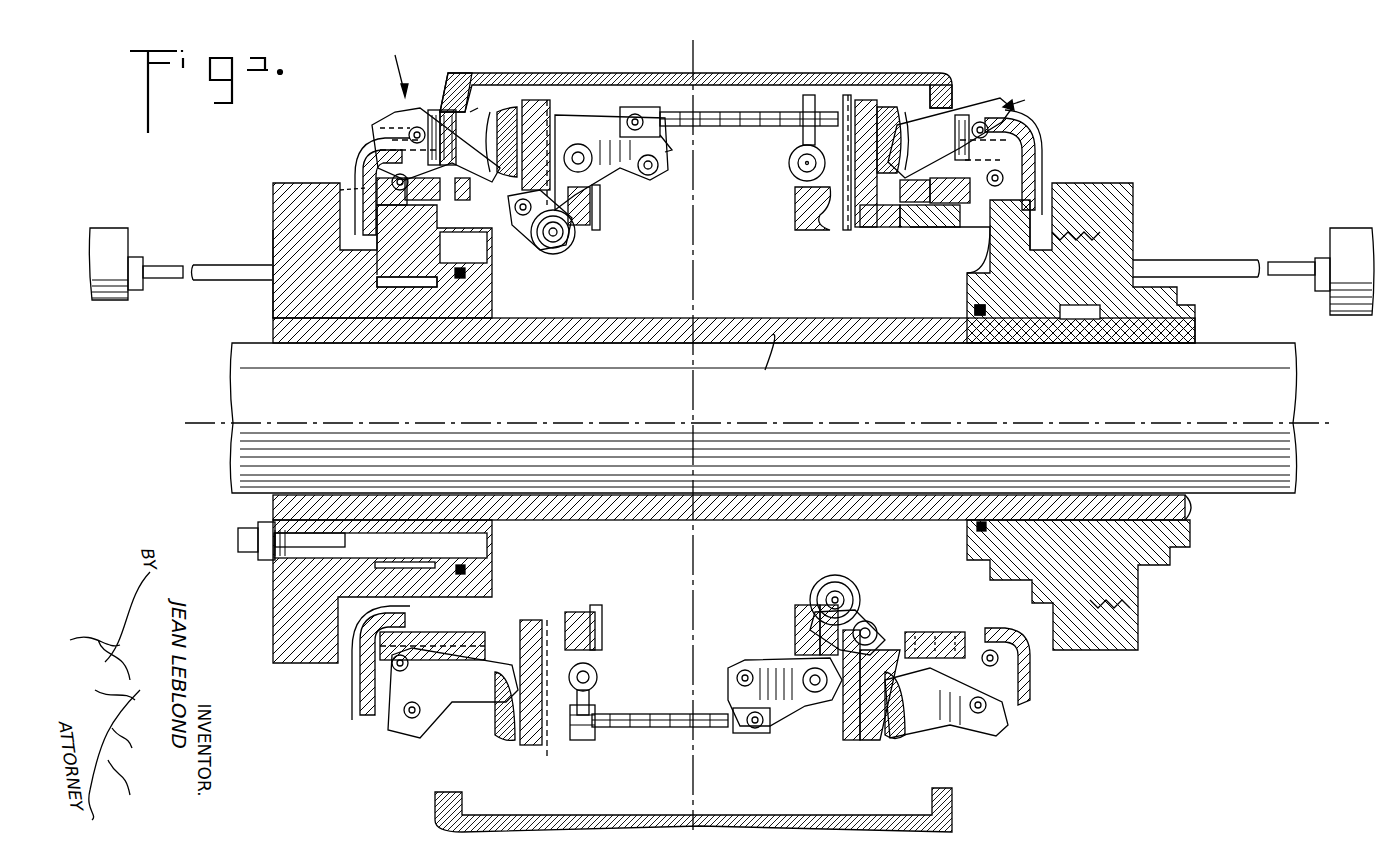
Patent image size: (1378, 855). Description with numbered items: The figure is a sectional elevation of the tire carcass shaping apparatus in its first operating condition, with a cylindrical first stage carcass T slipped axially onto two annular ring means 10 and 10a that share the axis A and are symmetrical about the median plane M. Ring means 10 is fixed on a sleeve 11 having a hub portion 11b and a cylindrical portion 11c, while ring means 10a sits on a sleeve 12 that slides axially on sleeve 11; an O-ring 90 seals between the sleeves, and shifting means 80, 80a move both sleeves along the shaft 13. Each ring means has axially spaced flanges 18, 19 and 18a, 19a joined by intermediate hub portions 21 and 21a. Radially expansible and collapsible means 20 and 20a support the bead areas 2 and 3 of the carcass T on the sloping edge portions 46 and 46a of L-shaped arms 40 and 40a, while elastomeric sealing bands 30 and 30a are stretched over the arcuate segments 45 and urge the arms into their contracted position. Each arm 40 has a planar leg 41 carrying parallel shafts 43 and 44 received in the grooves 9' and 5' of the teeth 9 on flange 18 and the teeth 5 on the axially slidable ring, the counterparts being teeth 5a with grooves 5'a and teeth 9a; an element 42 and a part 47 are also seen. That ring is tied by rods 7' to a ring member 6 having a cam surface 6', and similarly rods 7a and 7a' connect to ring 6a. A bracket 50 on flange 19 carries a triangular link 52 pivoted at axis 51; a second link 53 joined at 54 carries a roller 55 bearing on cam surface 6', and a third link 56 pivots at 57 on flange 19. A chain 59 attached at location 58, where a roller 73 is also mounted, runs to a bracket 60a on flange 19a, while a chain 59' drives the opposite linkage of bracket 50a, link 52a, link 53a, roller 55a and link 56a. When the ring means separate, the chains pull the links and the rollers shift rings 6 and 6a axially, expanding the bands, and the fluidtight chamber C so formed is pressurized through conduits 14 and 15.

The bead area 2 is at (455, 85).
The bead area 3 is at (950, 95).
The teeth 5 is at (358, 191).
The teeth 5a is at (1025, 165).
The groove 5' is at (333, 201).
The groove 5'a is at (926, 218).
The ring member 6 is at (612, 417).
The ring member 6a is at (798, 215).
The cam surface 6' is at (573, 656).
The tie rod 7a is at (858, 178).
The tie rod 7' is at (452, 613).
The tie rod 7a' is at (935, 612).
The teeth 9 is at (373, 161).
The teeth 9a is at (985, 705).
The groove 9' is at (384, 114).
The annular ring means 10 is at (360, 215).
The annular ring means 10a is at (1030, 185).
The sleeve 11 is at (273, 208).
The hub portion 11b is at (278, 232).
The cylindrical portion 11c is at (760, 318).
The sleeve 12 is at (1110, 245).
The shaft 13 is at (250, 378).
The conduit 14 is at (245, 556).
The conduit 15 is at (275, 595).
The annular flange 18 is at (376, 140).
The annular flange 18a is at (1000, 150).
The annular flange 19 is at (590, 110).
The annular flange 19a is at (862, 100).
The radially expansible and collapsible means 20 is at (389, 64).
The radially expansible and collapsible means 20a is at (1034, 96).
The cylindrical hub portion 21 is at (440, 255).
The cylindrical hub portion 21a is at (905, 230).
The annular sealing band 30 is at (505, 118).
The annular sealing band 30a is at (895, 110).
The L-shaped arm 40 is at (420, 115).
The L-shaped arm 40a is at (1030, 82).
The leg 41 is at (372, 176).
The pin 42 is at (478, 108).
The shaft 43 is at (395, 195).
The shaft 44 is at (410, 128).
The arcuate segment portion 45 is at (500, 137).
The sloping outer edge portion 46 is at (445, 100).
The sloping outer edge portion 46a is at (975, 110).
The block 47 is at (440, 175).
The bracket 50 is at (555, 140).
The bracket 50a is at (845, 730).
The pivot axis 51 is at (655, 168).
The triangular link 52 is at (650, 185).
The triangular link 52a is at (748, 662).
The link 53 is at (595, 222).
The link 53a is at (810, 625).
The pivot connection 54 is at (578, 150).
The roller 55 is at (560, 260).
The roller 55a is at (828, 578).
The link 56 is at (540, 240).
The link 56a is at (858, 605).
The pivot axis 57 is at (515, 215).
The pivot location 58 is at (638, 115).
The chain 59 is at (749, 83).
The chain 59' is at (660, 747).
The bracket 60a is at (840, 100).
The roller 73 is at (677, 149).
The shifting means 80 is at (118, 232).
The shifting means 80a is at (1340, 228).
The O-ring 90 is at (978, 318).
The axis A is at (760, 423).
The chamber C is at (758, 369).
The median plane M is at (693, 431).
The first stage carcass T is at (800, 73).